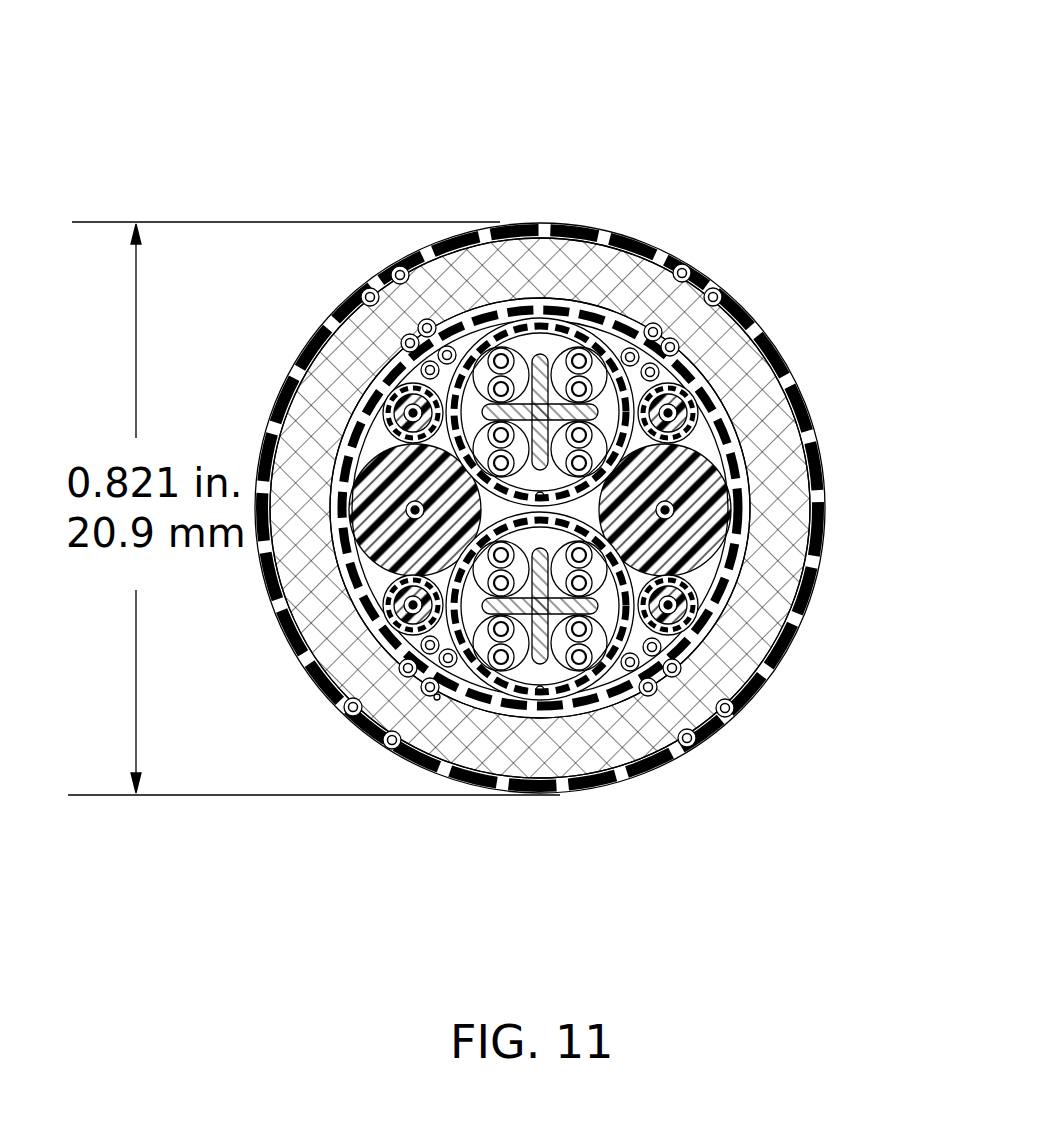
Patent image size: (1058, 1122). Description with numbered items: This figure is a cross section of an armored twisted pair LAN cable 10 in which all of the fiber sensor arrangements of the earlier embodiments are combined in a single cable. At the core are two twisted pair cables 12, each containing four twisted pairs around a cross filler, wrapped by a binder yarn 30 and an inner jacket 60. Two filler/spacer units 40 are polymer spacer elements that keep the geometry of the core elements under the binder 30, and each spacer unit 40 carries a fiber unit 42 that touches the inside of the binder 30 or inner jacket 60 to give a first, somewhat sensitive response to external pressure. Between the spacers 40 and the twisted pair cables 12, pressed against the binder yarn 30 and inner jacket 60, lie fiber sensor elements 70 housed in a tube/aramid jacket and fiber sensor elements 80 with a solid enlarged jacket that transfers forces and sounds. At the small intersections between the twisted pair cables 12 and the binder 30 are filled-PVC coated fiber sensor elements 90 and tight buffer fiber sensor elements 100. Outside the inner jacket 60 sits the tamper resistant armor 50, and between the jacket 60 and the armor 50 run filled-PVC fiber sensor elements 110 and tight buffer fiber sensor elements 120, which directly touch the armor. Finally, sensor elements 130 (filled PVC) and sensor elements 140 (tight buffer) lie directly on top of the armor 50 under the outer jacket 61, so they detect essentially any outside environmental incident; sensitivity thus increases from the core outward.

The data communication cable 10 is at (683, 92).
The twisted pair cable 12 is at (600, 330).
The binder yarn 30 is at (707, 593).
The filler/spacer unit 40 is at (650, 502).
The fiber unit 42 is at (700, 485).
The armor 50 is at (722, 675).
The inner jacket 60 is at (632, 693).
The outer jacket 61 is at (606, 787).
The fiber sensor element 70 is at (690, 585).
The fiber sensor element 80 is at (690, 392).
The fiber sensor element 90 is at (432, 685).
The fiber sensor element 100 is at (430, 646).
The fiber sensor element 110 is at (437, 697).
The fiber sensor element 120 is at (408, 668).
The sensor element 130 is at (690, 270).
The sensor element 140 is at (402, 272).